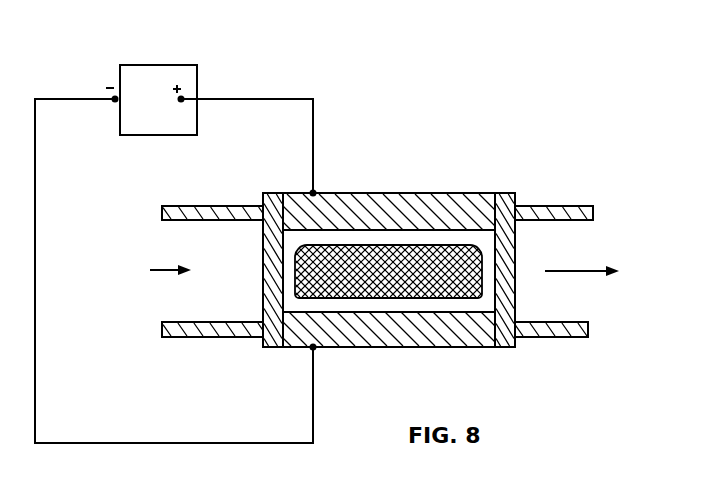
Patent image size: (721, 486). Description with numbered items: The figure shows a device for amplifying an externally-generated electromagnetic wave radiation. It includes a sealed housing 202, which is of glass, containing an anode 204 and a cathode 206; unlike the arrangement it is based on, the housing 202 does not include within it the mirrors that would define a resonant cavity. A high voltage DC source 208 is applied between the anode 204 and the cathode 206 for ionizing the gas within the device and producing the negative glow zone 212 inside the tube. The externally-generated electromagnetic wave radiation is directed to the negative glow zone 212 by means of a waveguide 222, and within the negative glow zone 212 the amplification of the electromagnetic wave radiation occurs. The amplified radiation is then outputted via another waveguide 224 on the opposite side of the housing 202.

The sealed housing 202 is at (273, 345).
The anode 204 is at (445, 200).
The cathode 206 is at (467, 342).
The high voltage DC source 208 is at (142, 128).
The negative glow zone 212 is at (367, 293).
The waveguide 222 is at (200, 333).
The waveguide 224 is at (577, 205).